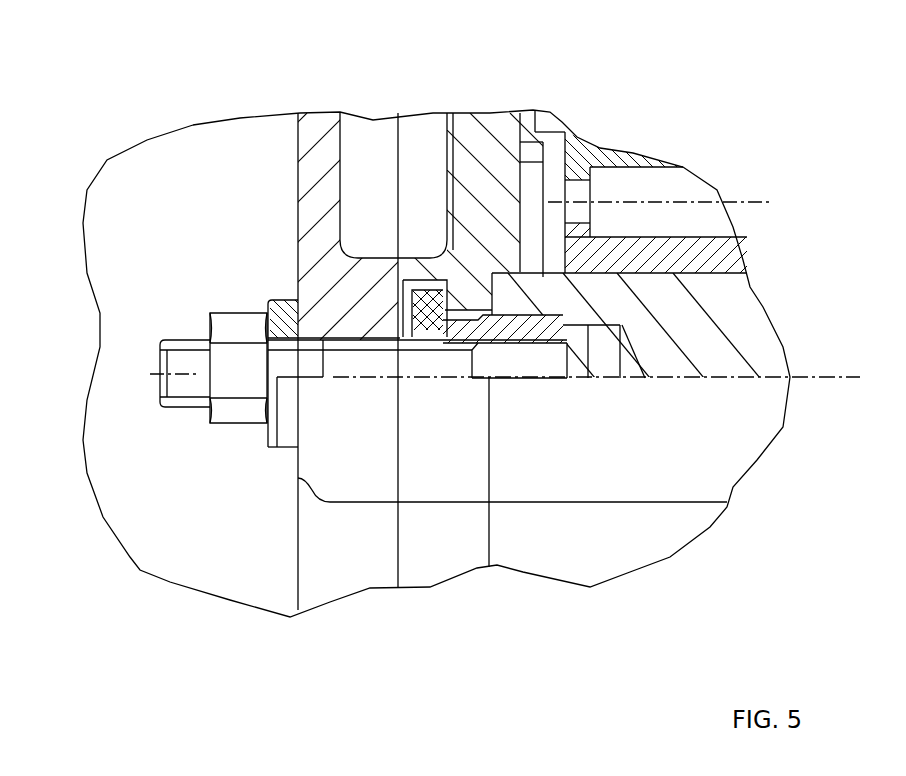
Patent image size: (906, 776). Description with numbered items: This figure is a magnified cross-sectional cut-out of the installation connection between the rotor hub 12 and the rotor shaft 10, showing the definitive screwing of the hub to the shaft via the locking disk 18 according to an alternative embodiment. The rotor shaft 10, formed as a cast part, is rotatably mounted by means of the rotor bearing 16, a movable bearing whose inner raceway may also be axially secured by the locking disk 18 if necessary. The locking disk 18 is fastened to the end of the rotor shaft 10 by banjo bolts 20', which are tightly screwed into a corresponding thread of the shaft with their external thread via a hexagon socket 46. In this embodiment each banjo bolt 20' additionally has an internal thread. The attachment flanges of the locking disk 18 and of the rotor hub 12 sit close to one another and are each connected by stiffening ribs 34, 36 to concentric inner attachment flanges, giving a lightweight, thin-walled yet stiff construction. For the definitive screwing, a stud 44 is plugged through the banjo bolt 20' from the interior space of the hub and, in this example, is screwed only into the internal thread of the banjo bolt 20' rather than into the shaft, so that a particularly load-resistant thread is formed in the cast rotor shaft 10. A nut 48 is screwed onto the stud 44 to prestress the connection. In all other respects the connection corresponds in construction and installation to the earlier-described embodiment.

The rotor shaft 10 is at (753, 303).
The rotor hub 12 is at (320, 125).
The rotor bearing 16 is at (633, 152).
The locking disk 18 is at (488, 120).
The banjo bolt 20' is at (275, 329).
The stiffening rib 34 is at (430, 125).
The stiffening rib 36 is at (367, 125).
The stud 44 is at (513, 367).
The hexagon socket 46 is at (400, 318).
The nut 48 is at (205, 408).